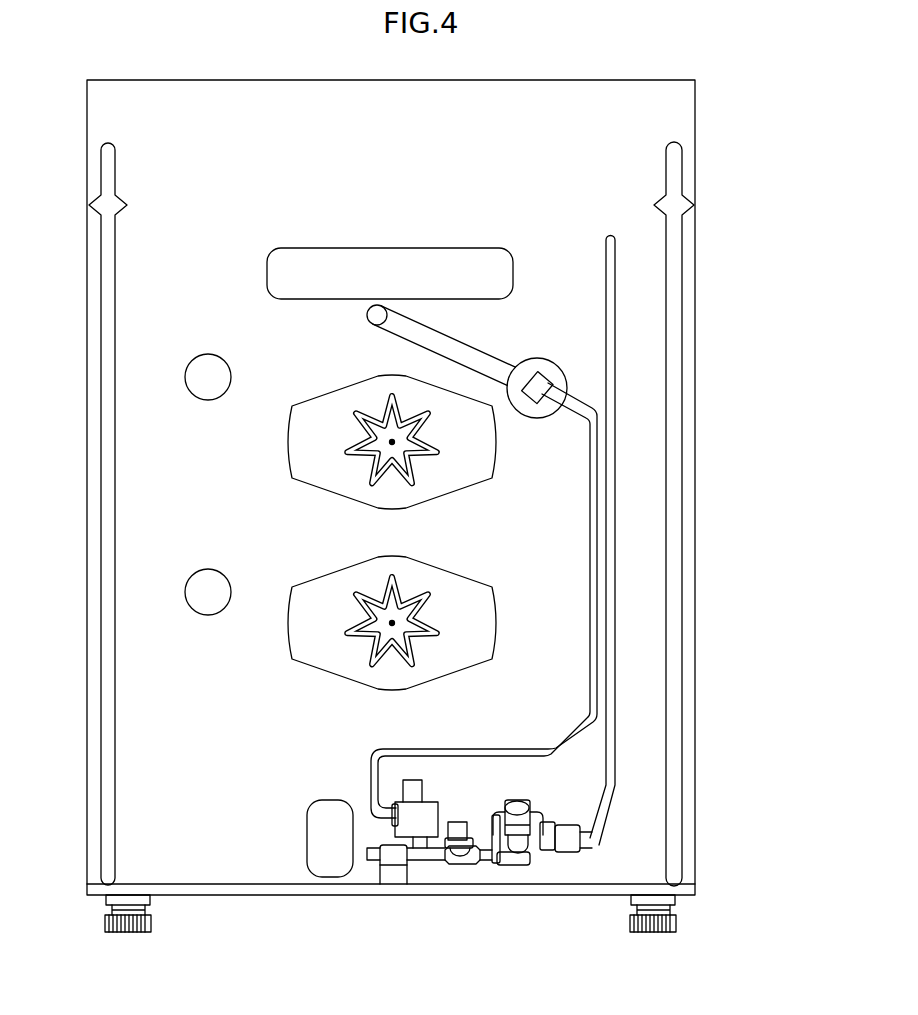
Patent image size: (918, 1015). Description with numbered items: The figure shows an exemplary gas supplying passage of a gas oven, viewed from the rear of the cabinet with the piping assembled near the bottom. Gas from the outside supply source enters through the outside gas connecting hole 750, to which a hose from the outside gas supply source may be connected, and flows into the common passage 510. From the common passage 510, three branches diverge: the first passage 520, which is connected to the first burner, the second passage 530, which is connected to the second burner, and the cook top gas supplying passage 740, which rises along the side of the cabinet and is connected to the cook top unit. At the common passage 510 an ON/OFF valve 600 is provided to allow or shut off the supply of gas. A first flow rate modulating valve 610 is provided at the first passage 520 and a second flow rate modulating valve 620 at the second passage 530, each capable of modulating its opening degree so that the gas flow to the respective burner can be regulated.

The common passage 510 is at (623, 856).
The first passage 520 is at (595, 650).
The second passage 530 is at (372, 858).
The ON/OFF valve 600 is at (455, 862).
The first flow rate modulating valve 610 is at (422, 840).
The second flow rate modulating valve 620 is at (388, 875).
The cook top gas supplying passage 740 is at (610, 700).
The outside gas connecting hole 750 is at (517, 800).